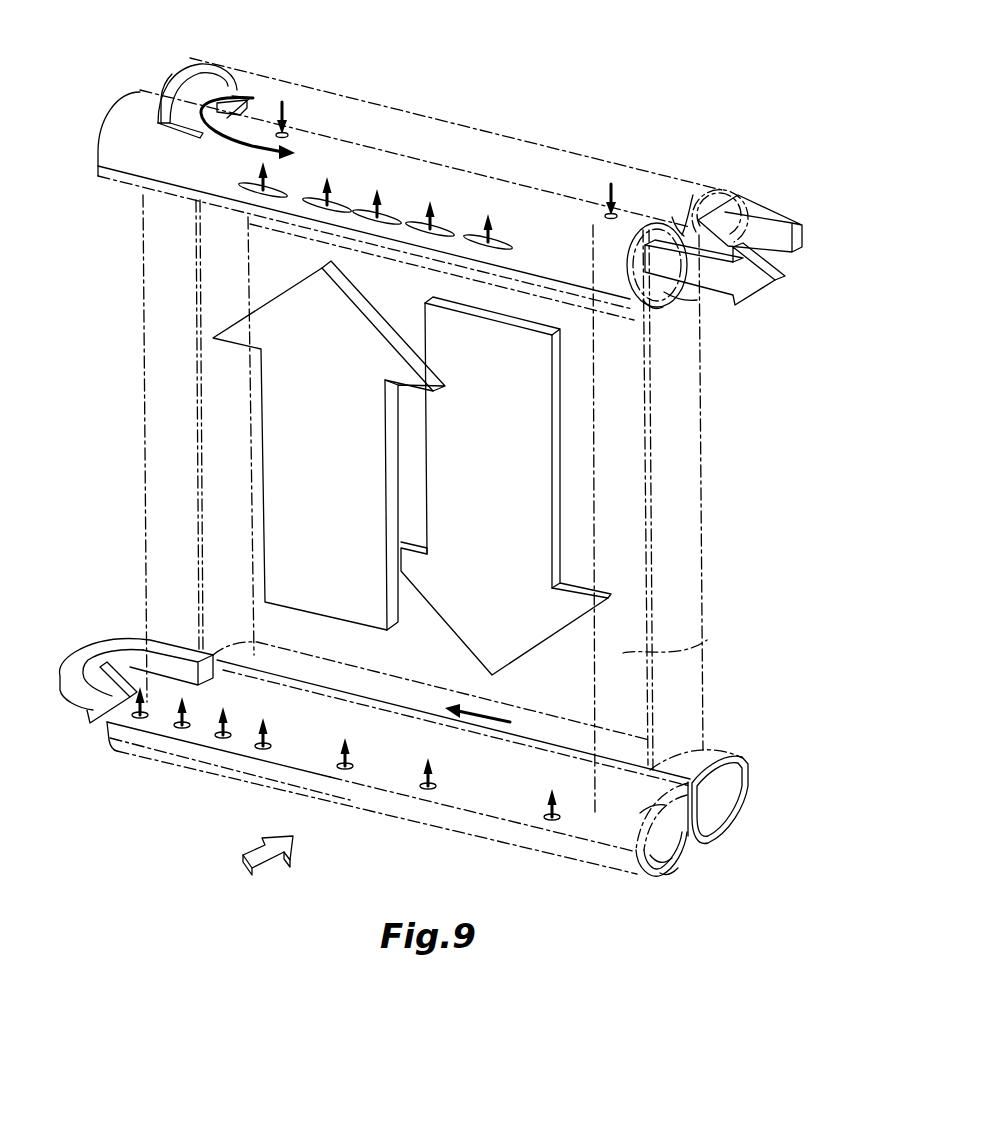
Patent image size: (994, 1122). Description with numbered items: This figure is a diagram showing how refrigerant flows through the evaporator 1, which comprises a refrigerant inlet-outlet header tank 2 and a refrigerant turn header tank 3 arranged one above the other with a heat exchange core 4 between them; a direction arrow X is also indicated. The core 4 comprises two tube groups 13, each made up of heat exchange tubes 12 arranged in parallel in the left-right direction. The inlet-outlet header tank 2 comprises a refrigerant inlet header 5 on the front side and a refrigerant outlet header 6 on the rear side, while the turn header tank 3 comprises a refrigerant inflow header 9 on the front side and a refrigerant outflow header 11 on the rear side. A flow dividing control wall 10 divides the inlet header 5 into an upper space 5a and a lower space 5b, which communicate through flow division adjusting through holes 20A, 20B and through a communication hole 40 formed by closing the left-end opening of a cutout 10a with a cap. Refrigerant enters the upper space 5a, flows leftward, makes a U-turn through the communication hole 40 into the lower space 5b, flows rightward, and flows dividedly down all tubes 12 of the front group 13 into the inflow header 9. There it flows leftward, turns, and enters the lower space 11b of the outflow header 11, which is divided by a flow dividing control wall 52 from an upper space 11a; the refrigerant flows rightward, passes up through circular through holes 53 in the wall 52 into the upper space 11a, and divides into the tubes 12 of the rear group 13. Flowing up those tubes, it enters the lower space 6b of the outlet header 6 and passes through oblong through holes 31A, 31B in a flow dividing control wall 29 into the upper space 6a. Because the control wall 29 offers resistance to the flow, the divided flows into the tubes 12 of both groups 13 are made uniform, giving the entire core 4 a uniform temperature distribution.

The evaporator 1 is at (676, 90).
The refrigerant inlet-outlet header tank 2 is at (497, 100).
The refrigerant turn header tank 3 is at (162, 812).
The heat exchange core 4 is at (143, 473).
The refrigerant inlet header 5 is at (168, 66).
The upper space 5a is at (718, 186).
The lower space 5b is at (767, 262).
The refrigerant outlet header 6 is at (138, 92).
The upper space 6a is at (680, 240).
The lower space 6b is at (663, 307).
The refrigerant inflow header 9 is at (748, 786).
The flow dividing control wall 10 is at (745, 211).
The cutout 10a is at (252, 98).
The refrigerant outflow header 11 is at (637, 870).
The upper space 11a is at (640, 813).
The lower space 11b is at (672, 873).
The heat exchange tube 12 is at (623, 653).
The tube group 13 is at (623, 425).
The flow division adjusting through hole 20A is at (283, 128).
The flow division adjusting through hole 20B is at (611, 214).
The flow dividing control wall 29 is at (697, 300).
The refrigerant passing oblong through hole 31A is at (363, 212).
The refrigerant passing oblong through hole 31B is at (243, 183).
The communication hole 40 is at (220, 100).
The flow dividing control wall 52 is at (678, 853).
The refrigerant passing circular through hole 53 is at (412, 790).
The direction X is at (278, 866).